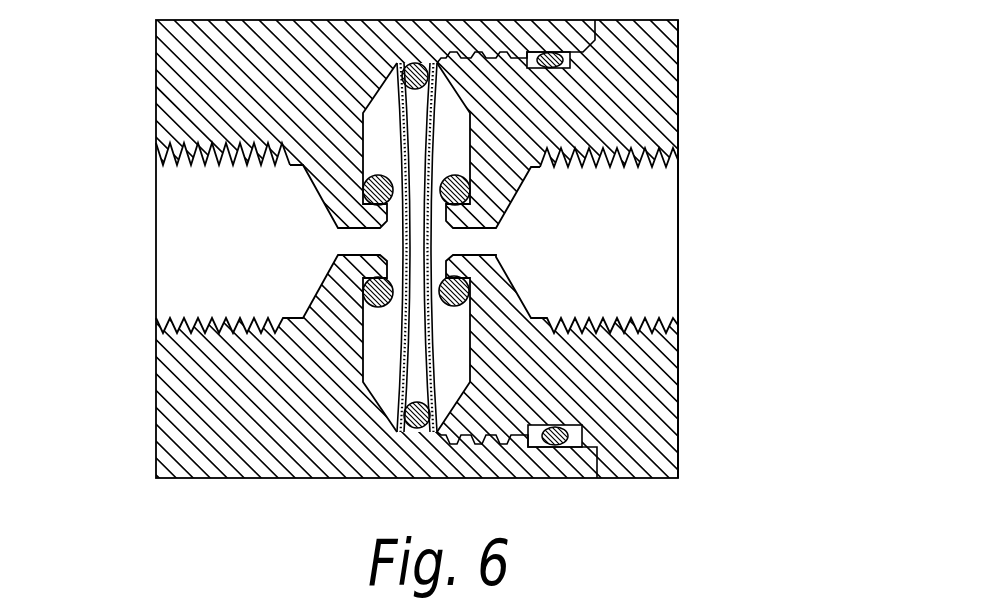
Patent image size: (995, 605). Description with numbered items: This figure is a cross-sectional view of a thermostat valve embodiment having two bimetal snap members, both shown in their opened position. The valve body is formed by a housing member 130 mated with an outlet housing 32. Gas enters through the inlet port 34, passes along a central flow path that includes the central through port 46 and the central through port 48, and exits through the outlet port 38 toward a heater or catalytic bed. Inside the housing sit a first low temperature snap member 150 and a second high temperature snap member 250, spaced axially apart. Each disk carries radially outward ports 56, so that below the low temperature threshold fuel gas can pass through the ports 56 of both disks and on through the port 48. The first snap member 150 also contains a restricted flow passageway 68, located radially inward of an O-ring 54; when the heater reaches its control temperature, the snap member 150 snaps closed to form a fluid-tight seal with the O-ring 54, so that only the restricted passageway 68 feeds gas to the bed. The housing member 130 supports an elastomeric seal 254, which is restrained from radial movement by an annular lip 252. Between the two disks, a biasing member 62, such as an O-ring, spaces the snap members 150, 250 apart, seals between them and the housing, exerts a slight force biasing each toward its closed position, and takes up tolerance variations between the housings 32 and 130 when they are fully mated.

The housing member 130 is at (165, 54).
The outlet housing 32 is at (660, 62).
The ports 56 is at (402, 153).
The inlet port 34 is at (206, 205).
The outlet port 38 is at (656, 205).
The annular lip 252 is at (326, 204).
The elastomeric seal 254 is at (365, 292).
The O-ring 54 is at (468, 295).
The second high temperature snap member 250 is at (402, 233).
The central through port 46 is at (343, 243).
The central through port 48 is at (487, 243).
The restricted flow passageway 68 is at (428, 241).
The first snap member 150 is at (433, 368).
The biasing member 62 is at (397, 433).